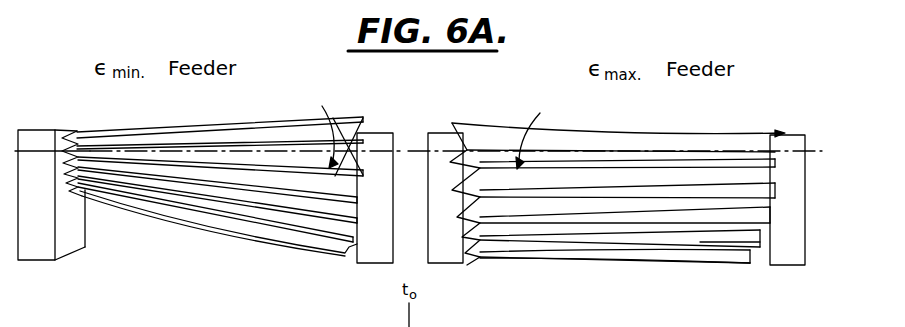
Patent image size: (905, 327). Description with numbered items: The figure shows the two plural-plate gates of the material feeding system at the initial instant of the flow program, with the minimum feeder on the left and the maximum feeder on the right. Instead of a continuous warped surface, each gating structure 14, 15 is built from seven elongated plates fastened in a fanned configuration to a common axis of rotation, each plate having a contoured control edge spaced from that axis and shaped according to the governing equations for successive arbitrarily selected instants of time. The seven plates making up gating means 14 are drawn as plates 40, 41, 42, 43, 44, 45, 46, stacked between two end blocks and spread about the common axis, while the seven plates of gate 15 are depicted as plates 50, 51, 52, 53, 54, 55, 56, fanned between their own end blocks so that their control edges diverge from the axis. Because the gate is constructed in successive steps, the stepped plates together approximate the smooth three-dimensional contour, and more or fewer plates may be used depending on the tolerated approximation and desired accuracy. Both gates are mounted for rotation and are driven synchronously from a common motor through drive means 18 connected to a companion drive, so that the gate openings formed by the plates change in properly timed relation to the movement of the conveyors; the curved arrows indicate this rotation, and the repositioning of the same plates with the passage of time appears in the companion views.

The gate 14 is at (610, 310).
The gate 15 is at (234, 276).
The drive means 18 is at (408, 152).
The gating plate 40 is at (548, 255).
The gating plate 41 is at (665, 248).
The gating plate 42 is at (720, 233).
The gating plate 43 is at (747, 208).
The gating plate 44 is at (752, 185).
The gating plate 45 is at (760, 163).
The gating plate 46 is at (737, 142).
The gating plate 50 is at (223, 223).
The gating plate 51 is at (209, 207).
The gating plate 52 is at (302, 205).
The gating plate 53 is at (338, 189).
The gating plate 54 is at (345, 161).
The gating plate 55 is at (287, 143).
The gating plate 56 is at (237, 125).